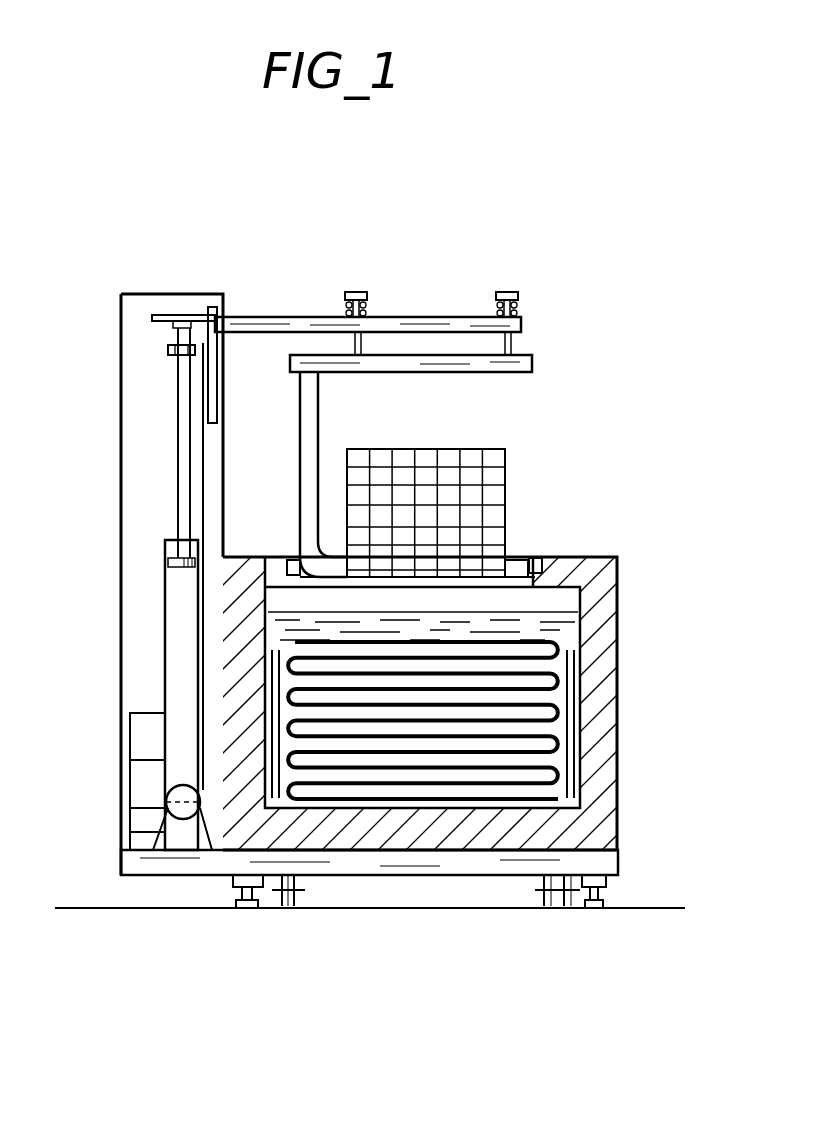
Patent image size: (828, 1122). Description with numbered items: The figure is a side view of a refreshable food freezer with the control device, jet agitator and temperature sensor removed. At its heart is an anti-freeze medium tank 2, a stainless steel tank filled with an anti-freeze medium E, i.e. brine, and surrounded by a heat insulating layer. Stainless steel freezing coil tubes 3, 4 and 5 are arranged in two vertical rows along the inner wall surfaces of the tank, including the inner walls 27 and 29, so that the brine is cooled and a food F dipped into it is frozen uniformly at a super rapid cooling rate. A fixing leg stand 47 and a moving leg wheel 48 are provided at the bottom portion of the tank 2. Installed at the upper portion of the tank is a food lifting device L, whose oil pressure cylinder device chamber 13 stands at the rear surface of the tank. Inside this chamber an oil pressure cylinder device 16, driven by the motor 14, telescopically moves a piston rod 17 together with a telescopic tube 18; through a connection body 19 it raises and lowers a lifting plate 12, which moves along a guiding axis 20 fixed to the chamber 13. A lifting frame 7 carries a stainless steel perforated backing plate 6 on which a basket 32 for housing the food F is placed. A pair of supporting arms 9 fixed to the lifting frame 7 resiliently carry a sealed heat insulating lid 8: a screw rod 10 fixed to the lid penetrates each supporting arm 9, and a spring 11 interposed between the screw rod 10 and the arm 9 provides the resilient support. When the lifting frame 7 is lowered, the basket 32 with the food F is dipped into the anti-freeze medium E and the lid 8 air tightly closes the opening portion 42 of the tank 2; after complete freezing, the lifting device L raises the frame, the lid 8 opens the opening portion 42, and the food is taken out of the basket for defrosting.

The food lifting device L is at (286, 238).
The anti-freeze medium tank 2 is at (617, 676).
The freezing coil tube 3 is at (270, 660).
The freezing coil tube 4 is at (420, 790).
The freezing coil tube 5 is at (576, 730).
The stainless steel backing perforated plate 6 is at (513, 560).
The lifting frame 7 is at (300, 415).
The sealed heat insulating lid 8 is at (470, 362).
The supporting arm 9 is at (430, 317).
The screw rod 10 is at (352, 292).
The spring 11 is at (366, 306).
The lifting plate 12 is at (212, 307).
The oil pressure cylinder chamber 13 is at (121, 294).
The motor of an oil pressure cylinder 14 is at (140, 790).
The oil pressure cylinder device 16 is at (165, 598).
The piston rod 17 is at (175, 338).
The telescopic tube 18 is at (170, 428).
The connection body 19 is at (158, 315).
The guiding axis 20 is at (203, 495).
The inner wall of anti-freeze medium tank 27 is at (275, 688).
The inner wall of anti-freeze medium tank 29 is at (590, 620).
The basket 32 is at (508, 470).
The opening portion of the anti-freeze medium tank 42 is at (538, 558).
The die stand 47 is at (240, 893).
The die wheel 48 is at (288, 906).
The anti-freeze medium E is at (560, 600).
The food to be frozen F is at (398, 450).